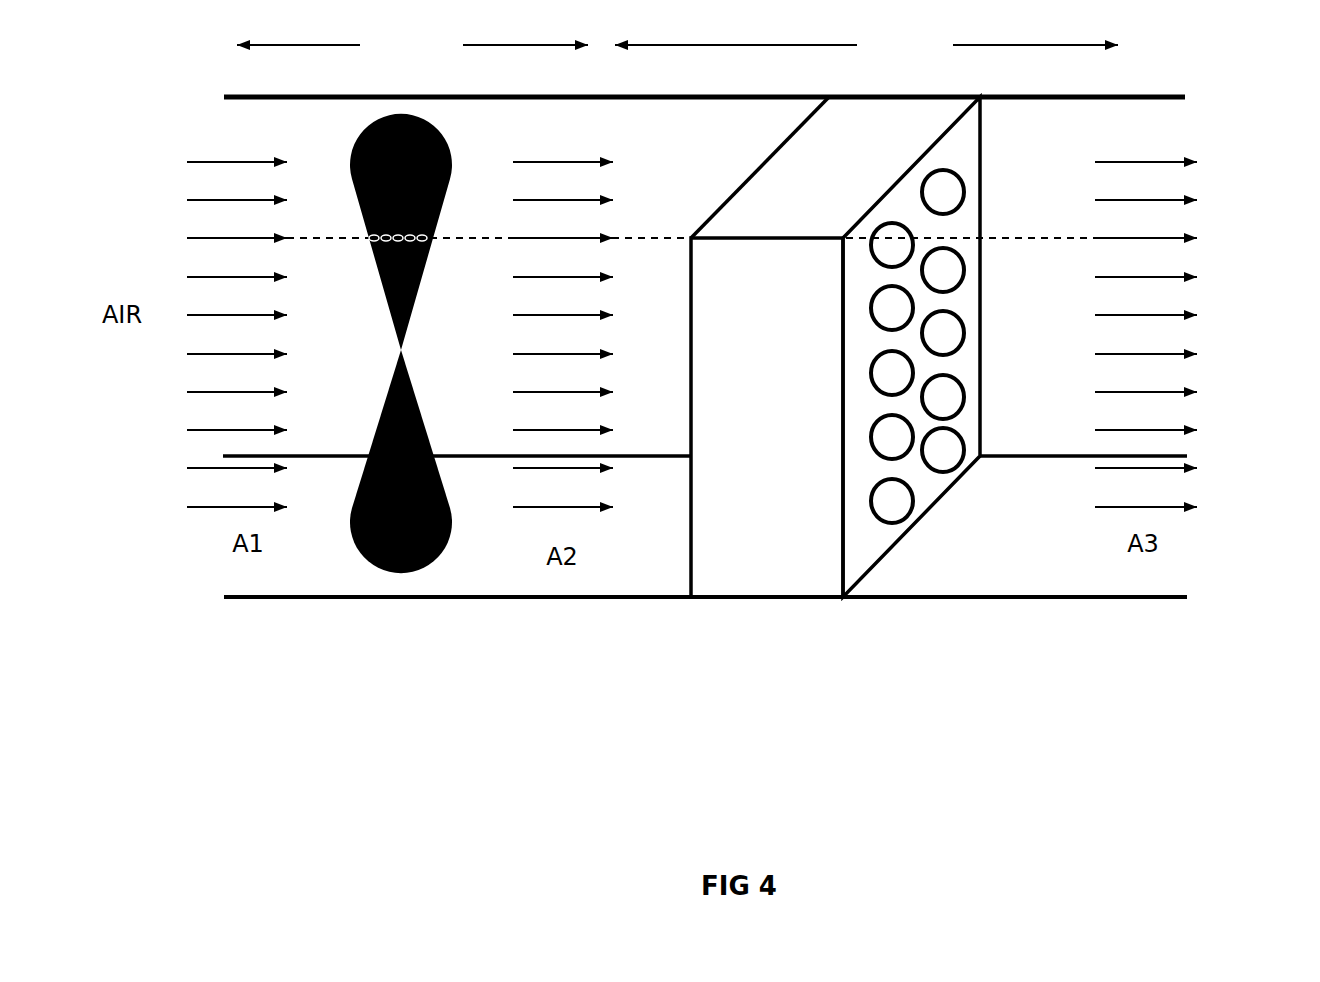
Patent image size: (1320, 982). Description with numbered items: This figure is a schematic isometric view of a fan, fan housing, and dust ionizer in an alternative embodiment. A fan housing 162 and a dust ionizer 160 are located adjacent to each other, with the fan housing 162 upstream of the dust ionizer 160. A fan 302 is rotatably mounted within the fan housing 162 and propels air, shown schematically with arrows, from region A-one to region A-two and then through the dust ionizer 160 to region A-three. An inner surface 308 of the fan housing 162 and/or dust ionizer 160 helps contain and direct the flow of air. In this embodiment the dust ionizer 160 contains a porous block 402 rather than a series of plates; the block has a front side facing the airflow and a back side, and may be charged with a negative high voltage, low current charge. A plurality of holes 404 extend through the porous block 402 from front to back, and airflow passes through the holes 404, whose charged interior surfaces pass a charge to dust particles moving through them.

The dust ionizer 160 is at (866, 45).
The fan housing 162 is at (412, 45).
The fan 302 is at (425, 585).
The inner surface 308 is at (1163, 595).
The porous block 402 is at (717, 570).
The holes 404 is at (957, 185).